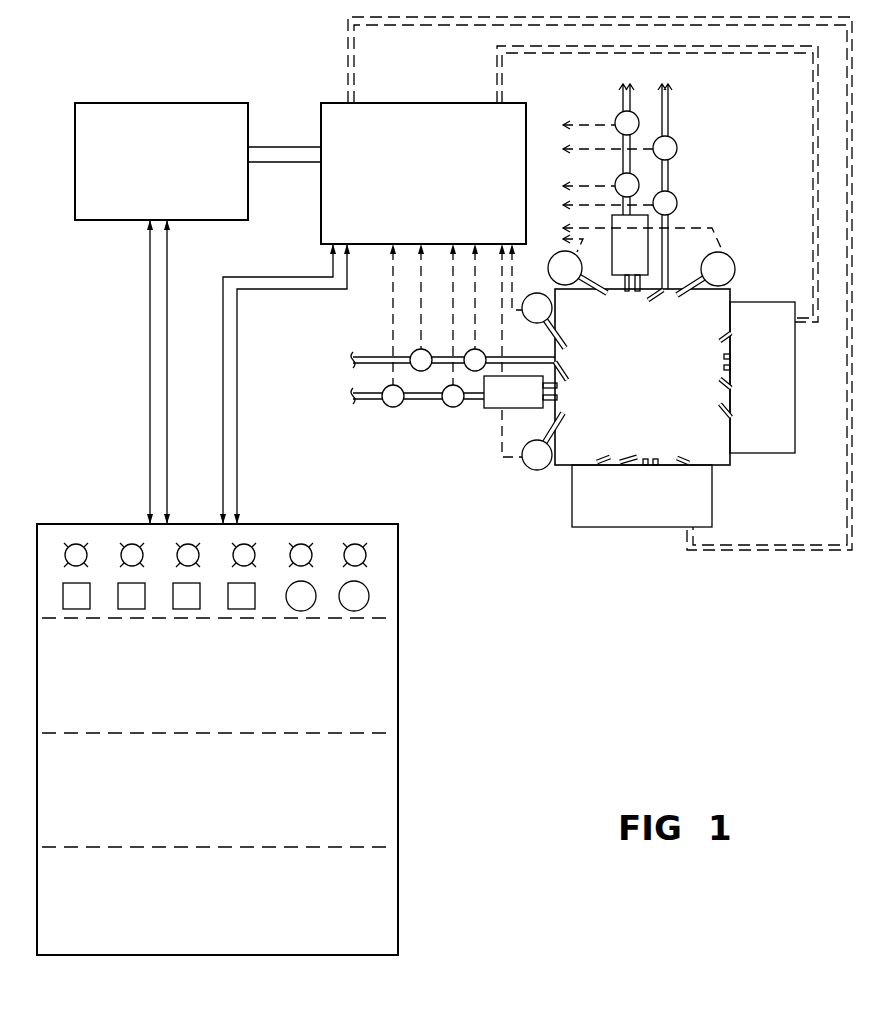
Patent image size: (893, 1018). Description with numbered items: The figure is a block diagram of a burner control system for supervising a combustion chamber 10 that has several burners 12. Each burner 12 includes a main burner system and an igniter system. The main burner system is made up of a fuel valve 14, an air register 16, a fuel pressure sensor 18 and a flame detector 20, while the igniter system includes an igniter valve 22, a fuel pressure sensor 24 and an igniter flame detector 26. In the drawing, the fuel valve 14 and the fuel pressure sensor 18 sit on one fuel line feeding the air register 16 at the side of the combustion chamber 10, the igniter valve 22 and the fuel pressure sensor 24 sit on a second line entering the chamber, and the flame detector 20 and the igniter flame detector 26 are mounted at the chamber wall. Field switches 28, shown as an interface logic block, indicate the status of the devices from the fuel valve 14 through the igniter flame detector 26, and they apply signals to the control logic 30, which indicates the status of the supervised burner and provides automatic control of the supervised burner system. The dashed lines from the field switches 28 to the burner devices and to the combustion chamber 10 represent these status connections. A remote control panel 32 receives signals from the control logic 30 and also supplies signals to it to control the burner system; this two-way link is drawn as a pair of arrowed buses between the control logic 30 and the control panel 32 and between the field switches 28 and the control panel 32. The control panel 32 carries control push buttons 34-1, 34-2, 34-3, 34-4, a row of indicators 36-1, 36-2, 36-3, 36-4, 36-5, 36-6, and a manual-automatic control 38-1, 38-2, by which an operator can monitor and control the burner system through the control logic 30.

The combustion chamber 10 is at (730, 467).
The burner 12 is at (638, 295).
The fuel valve 14 is at (388, 408).
The air register 16 is at (485, 410).
The fuel pressure sensor 18 is at (448, 408).
The flame detector 20 is at (530, 471).
The igniter valve 22 is at (415, 350).
The fuel pressure sensor 24 is at (470, 350).
The igniter flame detector 26 is at (532, 294).
The field switches 28 is at (330, 103).
The control logic 30 is at (100, 222).
The remote control panel 32 is at (400, 766).
The control push button 34-1 is at (89, 610).
The control push button 34-2 is at (145, 610).
The control push button 34-3 is at (200, 609).
The control push button 34-4 is at (256, 609).
The indicator 36-1 is at (73, 545).
The indicator 36-2 is at (130, 545).
The indicator 36-3 is at (197, 547).
The indicator 36-4 is at (246, 550).
The indicator 36-5 is at (305, 550).
The indicator 36-6 is at (360, 550).
The manual-automatic control 38-1 is at (309, 604).
The manual-automatic control 38-2 is at (366, 600).